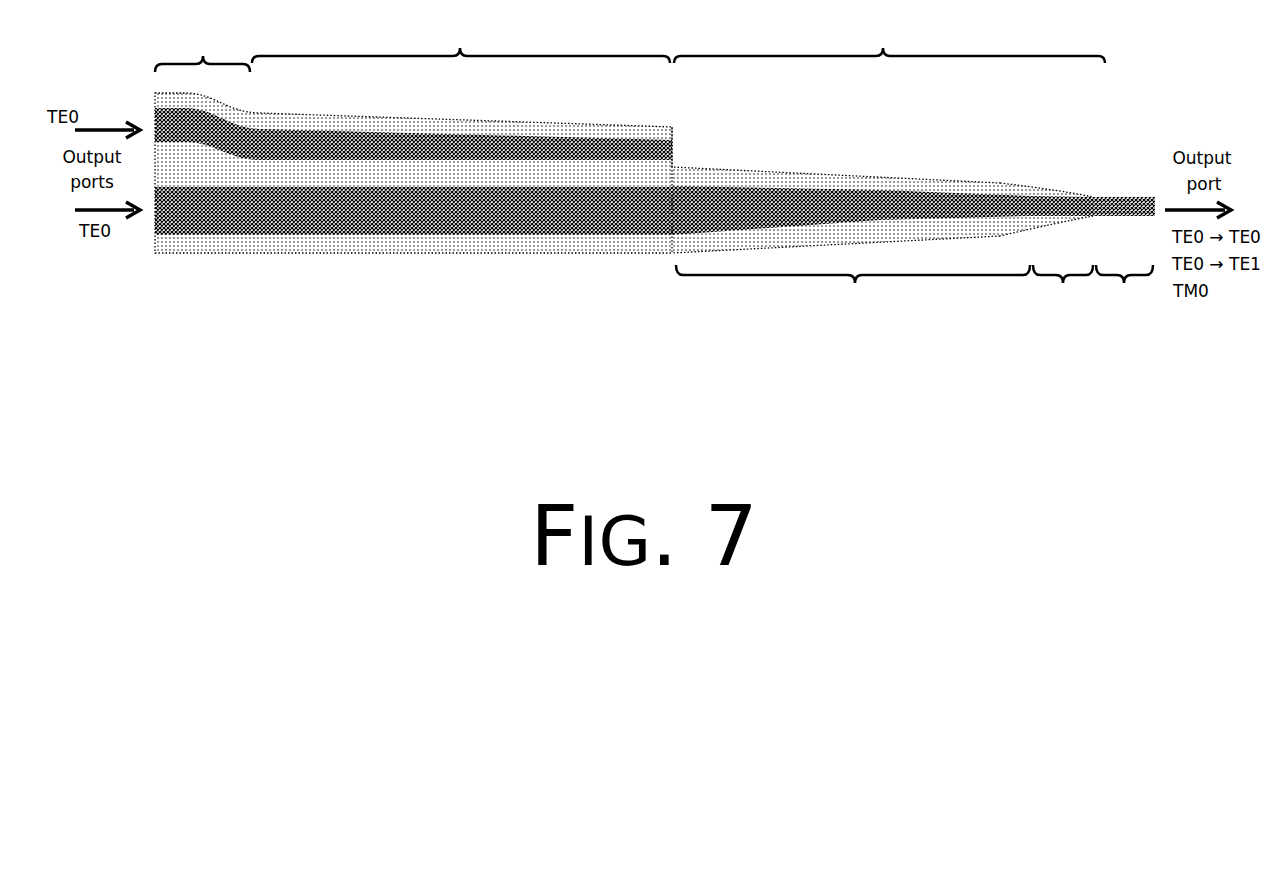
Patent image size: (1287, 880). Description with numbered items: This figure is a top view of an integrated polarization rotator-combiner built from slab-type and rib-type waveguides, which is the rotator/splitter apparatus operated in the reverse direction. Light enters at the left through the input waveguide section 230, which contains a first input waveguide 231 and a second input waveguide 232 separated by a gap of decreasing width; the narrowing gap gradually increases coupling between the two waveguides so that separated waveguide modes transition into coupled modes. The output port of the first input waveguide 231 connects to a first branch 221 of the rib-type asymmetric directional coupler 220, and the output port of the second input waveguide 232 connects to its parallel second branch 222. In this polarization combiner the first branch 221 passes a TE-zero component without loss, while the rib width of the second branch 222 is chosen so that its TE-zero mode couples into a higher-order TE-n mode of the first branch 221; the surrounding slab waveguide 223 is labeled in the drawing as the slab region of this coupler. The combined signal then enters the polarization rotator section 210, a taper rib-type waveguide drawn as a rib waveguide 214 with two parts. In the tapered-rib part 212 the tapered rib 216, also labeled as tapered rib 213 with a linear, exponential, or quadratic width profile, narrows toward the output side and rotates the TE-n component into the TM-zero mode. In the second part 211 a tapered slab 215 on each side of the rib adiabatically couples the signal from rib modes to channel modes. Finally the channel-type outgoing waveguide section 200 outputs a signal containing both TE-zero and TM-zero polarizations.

The outgoing waveguide section 200 is at (1145, 279).
The polarization rotator section 210 is at (935, 225).
The second part of taper rib-type waveguide 211 is at (1046, 245).
The tapered-rib rib-type waveguide part 212 is at (853, 316).
The tapered rib 213 is at (830, 218).
The rib waveguide 214 is at (932, 183).
The tapered slab 215 is at (1048, 197).
The tapered rib 216 is at (1067, 207).
The rib-type asymmetric directional coupler 220 is at (427, 197).
The first branch 221 is at (598, 212).
The second branch 222 is at (597, 148).
The slab waveguide 223 is at (463, 127).
The input waveguide section 230 is at (193, 183).
The first input waveguide 231 is at (185, 212).
The second input waveguide 232 is at (182, 137).